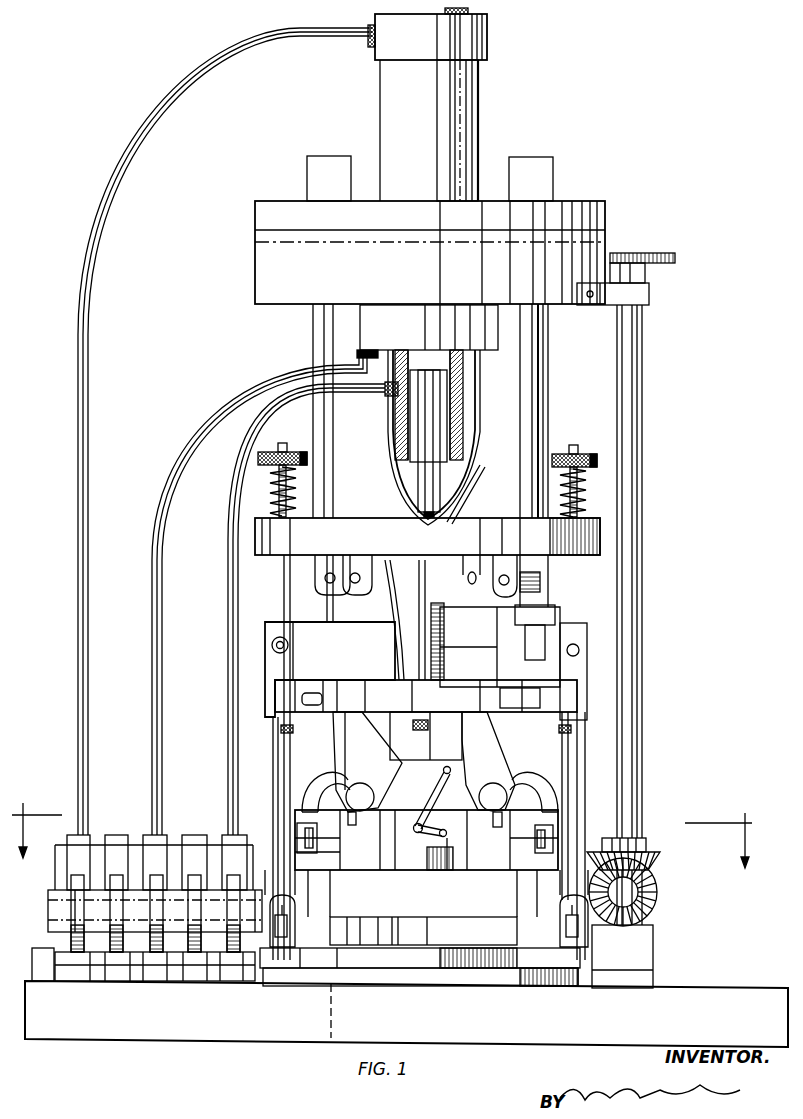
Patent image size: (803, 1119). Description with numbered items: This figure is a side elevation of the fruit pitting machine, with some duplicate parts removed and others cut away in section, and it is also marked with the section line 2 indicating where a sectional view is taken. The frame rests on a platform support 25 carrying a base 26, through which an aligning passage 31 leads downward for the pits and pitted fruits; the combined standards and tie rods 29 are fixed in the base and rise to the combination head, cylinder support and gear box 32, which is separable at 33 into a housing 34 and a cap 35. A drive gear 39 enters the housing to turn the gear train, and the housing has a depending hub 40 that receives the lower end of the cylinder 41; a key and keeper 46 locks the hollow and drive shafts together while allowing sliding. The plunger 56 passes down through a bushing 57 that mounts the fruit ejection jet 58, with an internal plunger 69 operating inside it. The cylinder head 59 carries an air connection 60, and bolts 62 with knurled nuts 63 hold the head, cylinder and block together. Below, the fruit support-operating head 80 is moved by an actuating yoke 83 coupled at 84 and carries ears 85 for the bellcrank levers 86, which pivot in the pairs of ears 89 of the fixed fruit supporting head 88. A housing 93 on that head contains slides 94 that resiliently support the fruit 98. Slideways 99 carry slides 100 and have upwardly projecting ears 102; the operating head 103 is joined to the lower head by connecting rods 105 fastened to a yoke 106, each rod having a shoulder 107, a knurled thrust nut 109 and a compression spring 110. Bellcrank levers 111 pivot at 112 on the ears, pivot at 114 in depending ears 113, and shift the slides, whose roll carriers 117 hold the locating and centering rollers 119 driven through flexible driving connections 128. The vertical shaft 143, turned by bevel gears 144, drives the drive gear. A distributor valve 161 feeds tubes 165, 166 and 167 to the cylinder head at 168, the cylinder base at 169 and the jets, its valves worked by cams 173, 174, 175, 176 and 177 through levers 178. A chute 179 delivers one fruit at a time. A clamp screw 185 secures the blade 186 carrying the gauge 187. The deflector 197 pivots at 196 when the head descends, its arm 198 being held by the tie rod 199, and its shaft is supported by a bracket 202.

The section line 2- 2 is at (382, 848).
The platform support 25 is at (97, 1030).
The base 26 is at (470, 985).
The combined standards and tie rods 29 is at (313, 417).
The aligning passage 31 is at (333, 1010).
The combination head, cylinder support and gear box 32 is at (605, 218).
The separation line 33 is at (608, 233).
The housing 34 is at (257, 272).
The cap 35 is at (257, 221).
The drive gear 39 is at (676, 258).
The depending hub 40 is at (485, 328).
The cylinder 41 is at (476, 141).
The key and keeper 46 is at (553, 176).
The plunger 56 is at (425, 447).
The bushing 57 is at (437, 360).
The fruit ejection jet 58 is at (447, 426).
The cylinder head 59 is at (487, 48).
The air connection 60 is at (370, 34).
The bolts 62 is at (462, 106).
The knurled nuts 63 is at (470, 10).
The internal plunger 69 is at (424, 514).
The fruit support-operating head 80 is at (410, 850).
The actuating yoke 83 is at (590, 920).
The yoke coupling 84 is at (300, 835).
The ears 85 is at (428, 842).
The bellcrank levers 86 is at (325, 768).
The fruit supporting head 88 is at (437, 750).
The pairs of ears 89 is at (378, 760).
The housing 93 is at (565, 705).
The slides 94 is at (560, 690).
The fruit 98 is at (488, 761).
The slideways 99 is at (560, 665).
The slide 100 is at (548, 613).
The upwardly projecting ear 102 is at (466, 610).
The operating head 103 is at (262, 538).
The connecting rods 105 is at (284, 742).
The yoke 106 is at (284, 947).
The shoulder 107 is at (600, 535).
The knurled thrust nut 109 is at (258, 458).
The compression spring 110 is at (275, 490).
The bellcrank levers 111 is at (497, 605).
The pivot 112 is at (422, 560).
The depending ears 113 is at (358, 590).
The pivot 114 is at (522, 575).
The roll carrier 117 is at (440, 650).
The locating and centering roller 119 is at (432, 645).
The flexible driving connection 128 is at (470, 500).
The vertical shaft 143 is at (632, 360).
The bevel gears 144 is at (657, 885).
The distributor valve 161 is at (116, 815).
The tube 165 is at (78, 713).
The tube 166 is at (156, 710).
The tube 167 is at (232, 692).
The cylinder head connection 168 is at (370, 45).
The cylinder base connection 169 is at (360, 352).
The cam 173 is at (78, 952).
The cam 174 is at (115, 952).
The cam 175 is at (155, 952).
The cam 176 is at (195, 952).
The cam 177 is at (233, 952).
The levers 178 is at (112, 838).
The chute 179 is at (476, 452).
The clamp screw 185 is at (273, 640).
The blade 186 is at (313, 632).
The gauge 187 is at (398, 565).
The pivotal point 196 is at (436, 842).
The deflector 197 is at (455, 775).
The arm 198 is at (444, 838).
The tie rod 199 is at (502, 818).
The bracket 202 is at (375, 862).